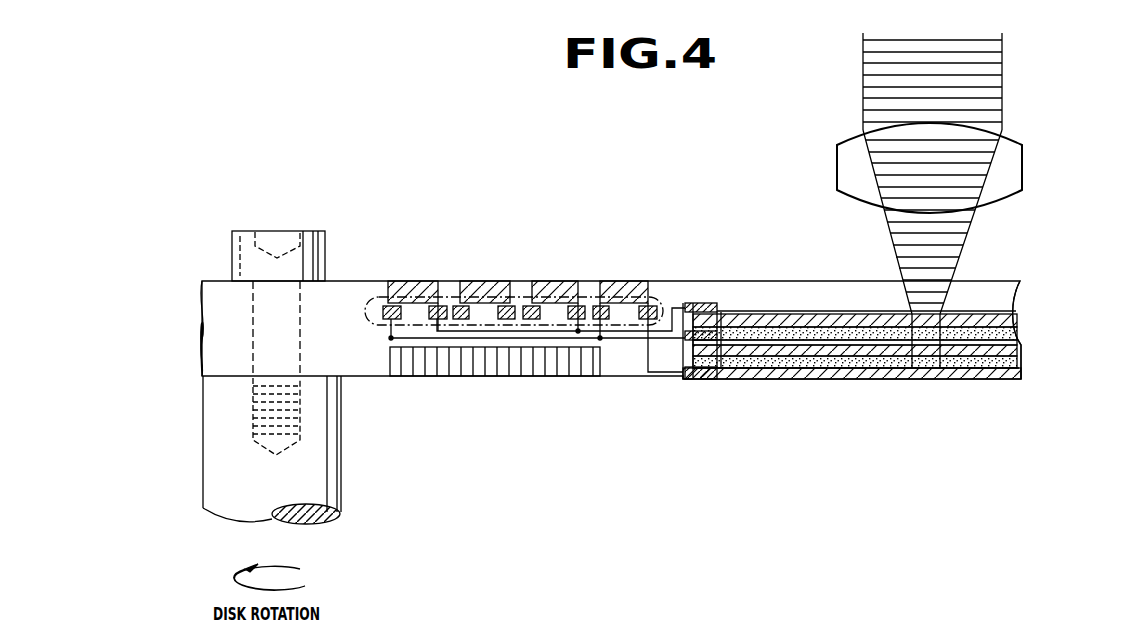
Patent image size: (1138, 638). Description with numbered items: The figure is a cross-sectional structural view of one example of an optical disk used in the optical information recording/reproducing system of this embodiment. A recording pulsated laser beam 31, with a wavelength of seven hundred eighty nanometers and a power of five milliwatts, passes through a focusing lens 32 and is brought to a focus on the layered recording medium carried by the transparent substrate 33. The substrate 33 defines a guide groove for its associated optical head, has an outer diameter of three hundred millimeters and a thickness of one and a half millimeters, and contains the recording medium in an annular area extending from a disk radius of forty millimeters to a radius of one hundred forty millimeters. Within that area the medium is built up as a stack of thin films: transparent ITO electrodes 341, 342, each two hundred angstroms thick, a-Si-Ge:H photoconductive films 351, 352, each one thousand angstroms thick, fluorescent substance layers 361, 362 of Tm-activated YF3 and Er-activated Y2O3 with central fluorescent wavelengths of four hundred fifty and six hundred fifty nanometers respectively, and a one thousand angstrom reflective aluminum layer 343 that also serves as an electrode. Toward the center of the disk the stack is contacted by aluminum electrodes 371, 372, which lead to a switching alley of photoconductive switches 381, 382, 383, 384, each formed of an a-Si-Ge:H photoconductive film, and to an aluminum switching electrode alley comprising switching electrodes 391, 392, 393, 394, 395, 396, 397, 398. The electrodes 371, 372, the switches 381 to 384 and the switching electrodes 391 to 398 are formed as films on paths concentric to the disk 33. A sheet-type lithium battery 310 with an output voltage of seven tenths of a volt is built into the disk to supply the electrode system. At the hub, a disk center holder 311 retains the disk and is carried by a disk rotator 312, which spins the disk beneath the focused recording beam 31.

The recording laser beam 31 is at (1005, 70).
The focusing lens 32 is at (1022, 163).
The transparent substrate 33 is at (990, 283).
The sheet-type battery 310 is at (545, 376).
The disk center holder 311 is at (247, 232).
The disk rotator 312 is at (342, 475).
The transparent electrode 341 is at (1007, 313).
The transparent electrode 342 is at (1022, 350).
The reflective electrode 343 is at (1005, 382).
The photoconductive layer 351 is at (1013, 328).
The photoconductive layer 352 is at (1023, 362).
The fluorescent substance layer 361 is at (1016, 342).
The fluorescent substance layer 362 is at (1022, 372).
The aluminum electrode 371 is at (692, 303).
The aluminum electrode 372 is at (722, 333).
The photoconductive switch 381 is at (415, 281).
The photoconductive switch 382 is at (483, 281).
The photoconductive switch 383 is at (556, 281).
The photoconductive switch 384 is at (625, 281).
The switching electrode 391 is at (382, 328).
The switching electrode 392 is at (454, 389).
The switching electrode 393 is at (485, 389).
The switching electrode 394 is at (526, 389).
The switching electrode 395 is at (557, 389).
The switching electrode 396 is at (598, 389).
The switching electrode 397 is at (629, 389).
The switching electrode 398 is at (666, 389).